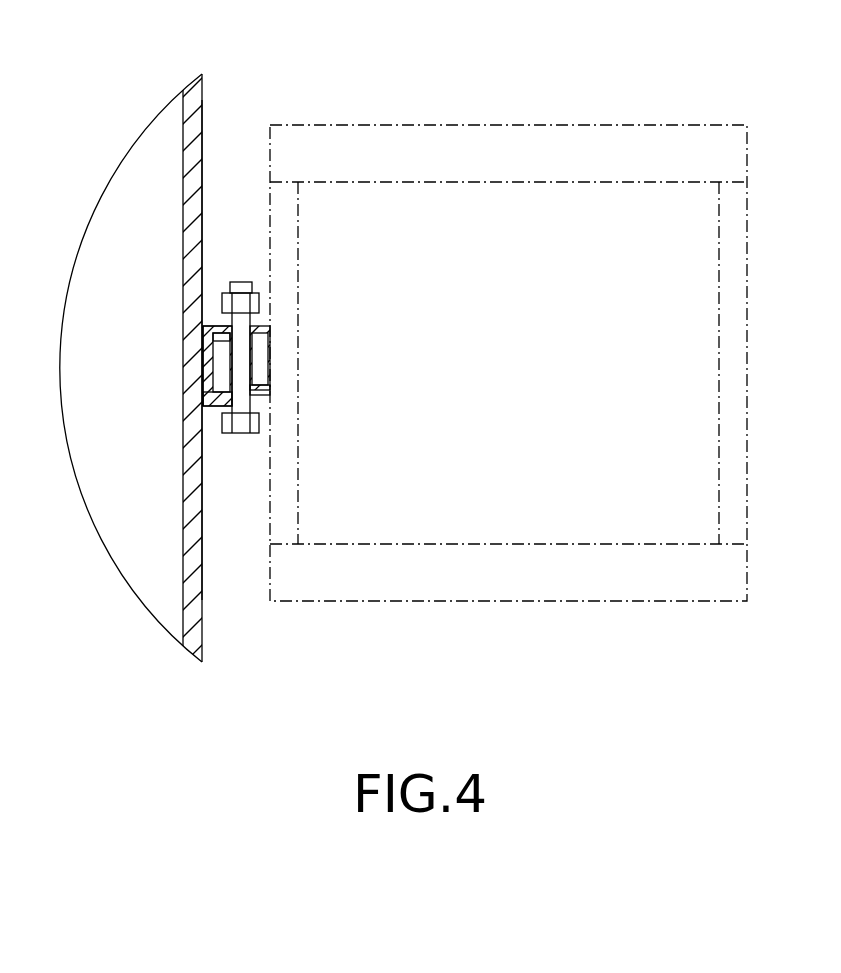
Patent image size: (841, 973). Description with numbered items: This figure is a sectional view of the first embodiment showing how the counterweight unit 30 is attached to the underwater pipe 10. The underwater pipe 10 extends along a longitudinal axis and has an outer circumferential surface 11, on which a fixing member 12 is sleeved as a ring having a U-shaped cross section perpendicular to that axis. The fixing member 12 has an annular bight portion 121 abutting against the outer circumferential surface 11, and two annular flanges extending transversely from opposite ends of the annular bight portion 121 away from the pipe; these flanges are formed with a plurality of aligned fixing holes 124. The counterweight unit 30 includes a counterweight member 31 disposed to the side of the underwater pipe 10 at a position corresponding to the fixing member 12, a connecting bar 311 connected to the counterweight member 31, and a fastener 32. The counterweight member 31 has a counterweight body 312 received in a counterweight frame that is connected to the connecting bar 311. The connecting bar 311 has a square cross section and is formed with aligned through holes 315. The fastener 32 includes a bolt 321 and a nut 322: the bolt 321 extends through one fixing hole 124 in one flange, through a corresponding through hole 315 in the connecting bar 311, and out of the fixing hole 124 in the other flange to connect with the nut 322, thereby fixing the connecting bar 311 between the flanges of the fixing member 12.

The underwater pipe 10 is at (205, 89).
The outer circumferential surface 11 is at (203, 125).
The fixing member 12 is at (212, 385).
The annular bight portion 121 is at (207, 360).
The fixing hole 124 is at (228, 325).
The counterweight unit 30 is at (650, 124).
The counterweight member 31 is at (535, 140).
The connecting bar 311 is at (220, 401).
The counterweight body 312 is at (372, 522).
The through hole 315 is at (268, 335).
The fastener 32 is at (240, 283).
The bolt 321 is at (223, 423).
The nut 322 is at (260, 305).